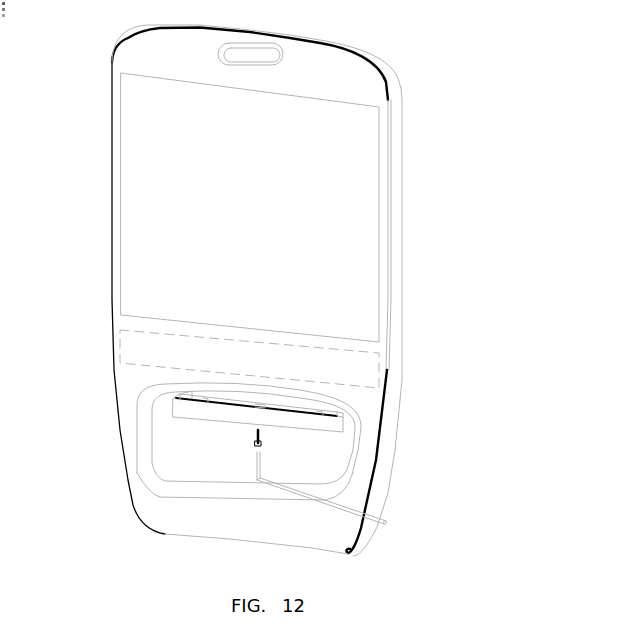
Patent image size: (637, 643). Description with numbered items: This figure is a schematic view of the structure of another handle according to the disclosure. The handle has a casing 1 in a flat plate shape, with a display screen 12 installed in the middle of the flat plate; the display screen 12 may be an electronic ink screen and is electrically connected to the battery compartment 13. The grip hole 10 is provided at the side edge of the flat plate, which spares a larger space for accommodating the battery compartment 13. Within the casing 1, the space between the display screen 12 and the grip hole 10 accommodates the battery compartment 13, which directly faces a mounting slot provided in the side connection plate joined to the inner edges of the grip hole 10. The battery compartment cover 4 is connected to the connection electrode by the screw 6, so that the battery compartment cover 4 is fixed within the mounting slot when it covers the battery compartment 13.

The casing 1 is at (352, 90).
The display screen 12 is at (352, 232).
The battery compartment 13 is at (352, 377).
The battery compartment cover 4 is at (173, 407).
The screw 6 is at (253, 442).
The grip hole 10 is at (328, 475).